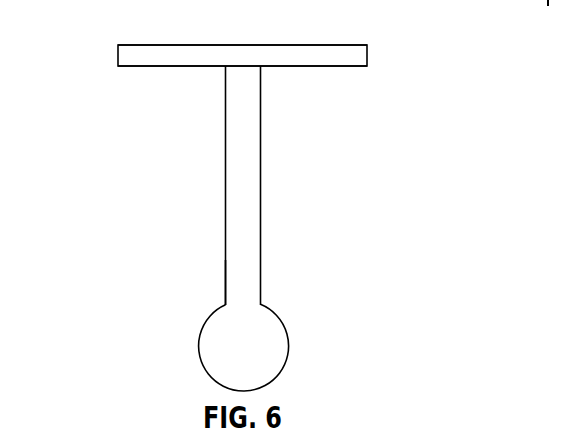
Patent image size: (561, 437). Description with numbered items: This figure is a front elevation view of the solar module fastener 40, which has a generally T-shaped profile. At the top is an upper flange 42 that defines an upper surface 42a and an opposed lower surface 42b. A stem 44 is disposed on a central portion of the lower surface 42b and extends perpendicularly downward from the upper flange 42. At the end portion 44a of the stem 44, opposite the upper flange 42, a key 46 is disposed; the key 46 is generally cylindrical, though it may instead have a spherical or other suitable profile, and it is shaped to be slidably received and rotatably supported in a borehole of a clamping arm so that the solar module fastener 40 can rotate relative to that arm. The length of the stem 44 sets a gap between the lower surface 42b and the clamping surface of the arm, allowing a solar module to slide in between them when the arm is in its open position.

The solar module fastener 40 is at (446, 55).
The upper flange 42 is at (121, 33).
The upper surface 42a is at (300, 44).
The lower surface 42b is at (296, 67).
The stem 44 is at (225, 223).
The end portion 44a is at (160, 351).
The key 46 is at (267, 341).